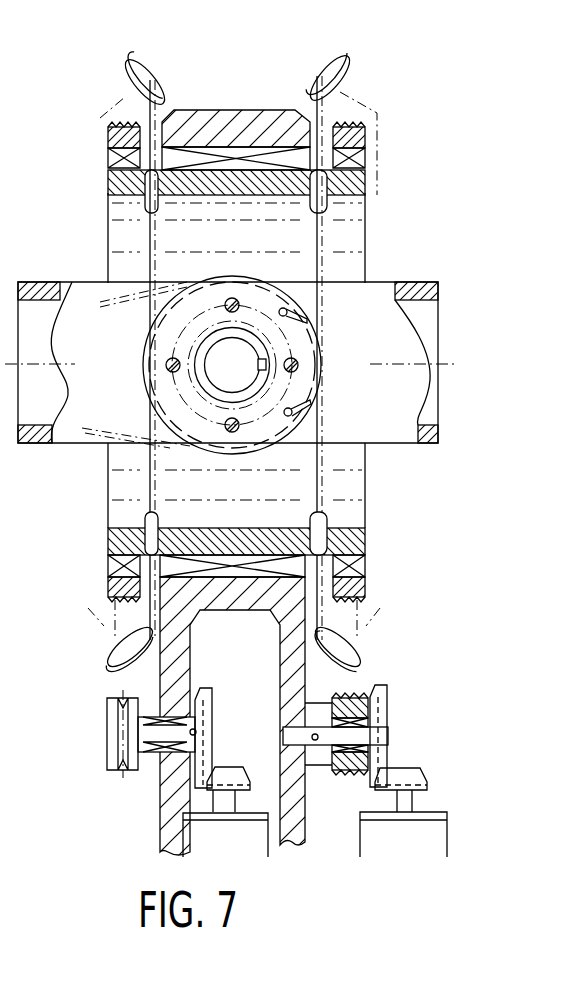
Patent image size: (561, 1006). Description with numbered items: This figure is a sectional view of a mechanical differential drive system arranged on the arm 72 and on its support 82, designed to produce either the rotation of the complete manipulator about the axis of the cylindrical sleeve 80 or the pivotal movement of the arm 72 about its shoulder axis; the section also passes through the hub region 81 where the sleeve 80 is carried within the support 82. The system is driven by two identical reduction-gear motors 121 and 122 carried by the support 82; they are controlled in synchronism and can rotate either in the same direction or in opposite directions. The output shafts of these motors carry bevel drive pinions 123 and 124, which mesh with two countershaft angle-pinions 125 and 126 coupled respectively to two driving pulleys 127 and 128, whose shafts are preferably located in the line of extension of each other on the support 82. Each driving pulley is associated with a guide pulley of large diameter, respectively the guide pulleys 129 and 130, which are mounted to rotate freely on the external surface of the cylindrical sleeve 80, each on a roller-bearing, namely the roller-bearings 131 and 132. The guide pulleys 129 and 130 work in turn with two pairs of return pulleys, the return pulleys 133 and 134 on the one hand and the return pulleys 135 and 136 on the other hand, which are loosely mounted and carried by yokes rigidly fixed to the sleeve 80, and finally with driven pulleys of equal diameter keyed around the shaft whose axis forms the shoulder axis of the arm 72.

The arm 72 is at (72, 283).
The cylindrical sleeve 80 is at (355, 186).
The bearing 81 is at (260, 150).
The support 82 is at (218, 118).
The reduction-gear motor 121 is at (435, 815).
The reduction-gear motor 122 is at (183, 815).
The bevel drive pinion 123 is at (405, 768).
The bevel drive pinion 124 is at (230, 768).
The countershaft angle-pinion 125 is at (387, 695).
The countershaft angle-pinion 126 is at (205, 692).
The pulley 127 is at (341, 772).
The pulley 128 is at (108, 770).
The guide pulley 129 is at (365, 590).
The guide pulley 130 is at (108, 590).
The roller-bearing 131 is at (365, 157).
The roller-bearing 132 is at (108, 158).
The return pulley 133 is at (348, 657).
The return pulley 134 is at (116, 654).
The return pulley 135 is at (325, 70).
The return pulley 136 is at (142, 70).